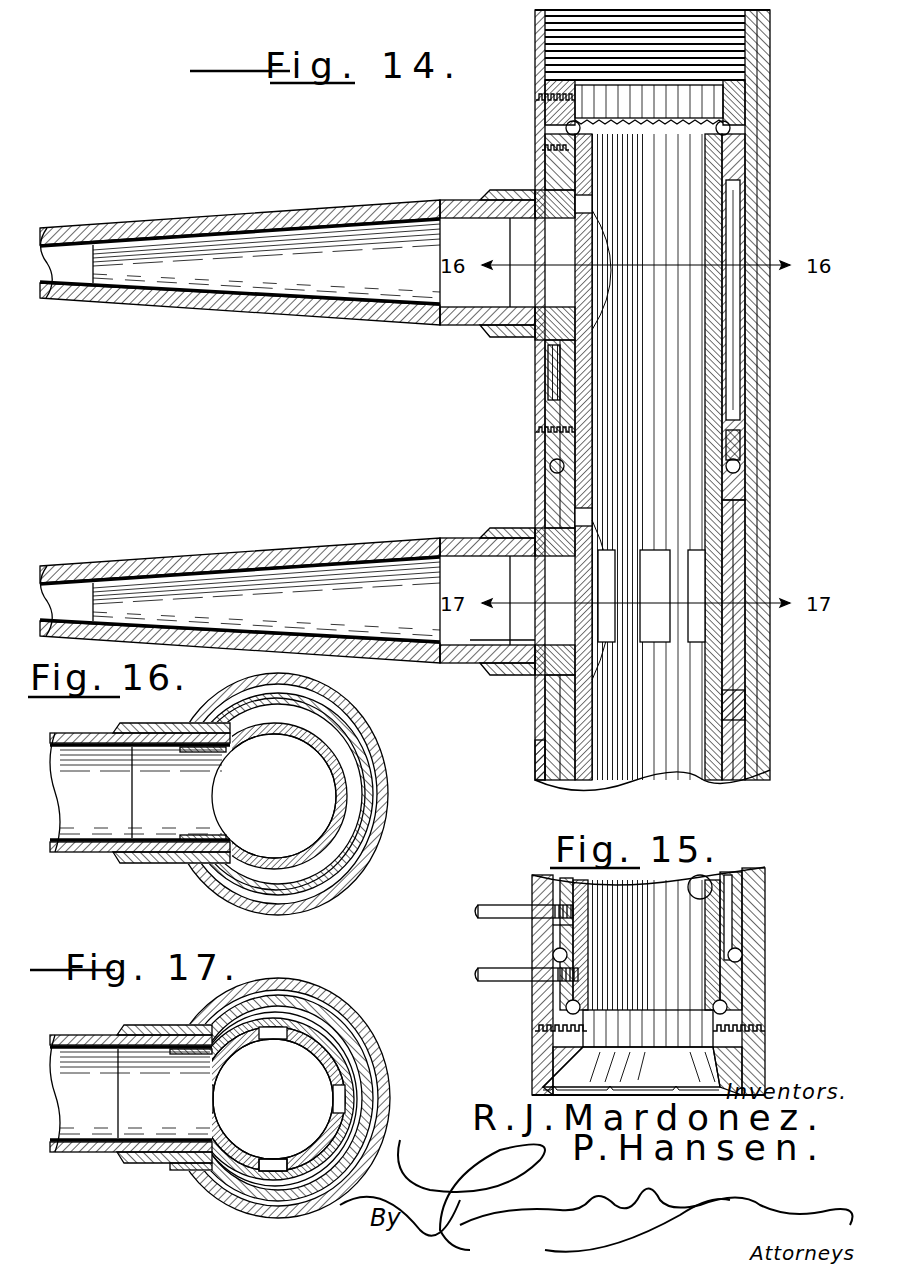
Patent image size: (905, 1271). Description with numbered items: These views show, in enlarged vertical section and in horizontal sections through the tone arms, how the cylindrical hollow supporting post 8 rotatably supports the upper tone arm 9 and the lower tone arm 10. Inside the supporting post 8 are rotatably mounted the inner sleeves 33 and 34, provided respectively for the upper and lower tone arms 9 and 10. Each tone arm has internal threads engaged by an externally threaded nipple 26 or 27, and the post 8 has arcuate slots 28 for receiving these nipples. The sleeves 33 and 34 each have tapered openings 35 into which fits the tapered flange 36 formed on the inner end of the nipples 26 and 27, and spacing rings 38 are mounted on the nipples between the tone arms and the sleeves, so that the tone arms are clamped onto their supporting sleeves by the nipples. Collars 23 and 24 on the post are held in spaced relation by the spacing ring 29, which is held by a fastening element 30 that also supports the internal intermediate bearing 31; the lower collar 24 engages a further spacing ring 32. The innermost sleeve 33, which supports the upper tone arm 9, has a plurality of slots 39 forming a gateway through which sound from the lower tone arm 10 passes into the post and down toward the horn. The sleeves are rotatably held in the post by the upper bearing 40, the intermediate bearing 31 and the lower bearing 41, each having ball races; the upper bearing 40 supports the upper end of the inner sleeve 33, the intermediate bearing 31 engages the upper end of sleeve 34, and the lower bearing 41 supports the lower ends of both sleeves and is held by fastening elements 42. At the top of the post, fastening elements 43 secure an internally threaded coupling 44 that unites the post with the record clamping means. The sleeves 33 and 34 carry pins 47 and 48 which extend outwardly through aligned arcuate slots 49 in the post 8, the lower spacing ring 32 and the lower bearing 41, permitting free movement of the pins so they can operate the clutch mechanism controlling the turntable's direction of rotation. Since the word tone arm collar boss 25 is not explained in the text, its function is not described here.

In FIG. 14, the hollow supporting post 8 is at (758, 330).
In FIG. 15, the hollow supporting post 8 is at (752, 992).
In FIG. 16, the hollow supporting post 8 is at (375, 832).
In FIG. 17, the hollow supporting post 8 is at (380, 1113).
In FIG. 14, the upper tone arm 9 is at (335, 240).
In FIG. 16, the upper tone arm 9 is at (92, 830).
In FIG. 14, the lower tone arm 10 is at (318, 575).
In FIG. 17, the lower tone arm 10 is at (92, 1155).
In FIG. 14, the upper collar 23 is at (770, 208).
In FIG. 16, the upper collar 23 is at (375, 760).
In FIG. 14, the lower collar 24 is at (760, 548).
In FIG. 17, the lower collar 24 is at (372, 1042).
In FIG. 14, the nozzle boss collar 25 is at (492, 192).
In FIG. 16, the nozzle boss collar 25 is at (150, 722).
In FIG. 17, the nozzle boss collar 25 is at (153, 1165).
In FIG. 14, the externally threaded nipple 26 is at (590, 245).
In FIG. 16, the externally threaded nipple 26 is at (183, 818).
In FIG. 14, the externally threaded nipple 27 is at (505, 640).
In FIG. 17, the externally threaded nipple 27 is at (188, 1132).
In FIG. 14, the arcuate slots 28 is at (545, 348).
In FIG. 16, the arcuate slots 28 is at (342, 885).
In FIG. 17, the arcuate slots 28 is at (322, 1212).
In FIG. 14, the spacing ring 29 is at (535, 415).
In FIG. 14, the fastening element 30 is at (535, 435).
In FIG. 14, the intermediate bearing 31 is at (745, 440).
In FIG. 14, the spacing ring 32 is at (535, 760).
In FIG. 15, the spacing ring 32 is at (762, 890).
In FIG. 14, the inner sleeve 33 is at (745, 160).
In FIG. 15, the inner sleeve 33 is at (732, 878).
In FIG. 16, the inner sleeve 33 is at (348, 796).
In FIG. 17, the inner sleeve 33 is at (350, 1080).
In FIG. 14, the inner sleeve 34 is at (760, 700).
In FIG. 15, the inner sleeve 34 is at (740, 922).
In FIG. 17, the inner sleeve 34 is at (322, 1100).
In FIG. 14, the tapered openings 35 is at (598, 206).
In FIG. 16, the tapered openings 35 is at (250, 862).
In FIG. 17, the tapered openings 35 is at (245, 1160).
In FIG. 14, the tapered flange 36 is at (615, 296).
In FIG. 16, the tapered flange 36 is at (233, 847).
In FIG. 17, the tapered flange 36 is at (230, 1142).
In FIG. 14, the spacing rings 38 is at (540, 190).
In FIG. 16, the spacing rings 38 is at (200, 858).
In FIG. 17, the spacing rings 38 is at (196, 1172).
In FIG. 14, the slots 39 is at (660, 568).
In FIG. 17, the slots 39 is at (275, 1172).
In FIG. 14, the upper bearing 40 is at (735, 106).
In FIG. 15, the lower bearing 41 is at (735, 975).
In FIG. 15, the fastening elements 42 is at (765, 1031).
In FIG. 14, the fastening elements 43 is at (537, 100).
In FIG. 14, the internally threaded coupling 44 is at (770, 50).
In FIG. 15, the pin 47 is at (515, 908).
In FIG. 15, the pin 48 is at (510, 984).
In FIG. 15, the aligned arcuate slots 49 is at (520, 918).